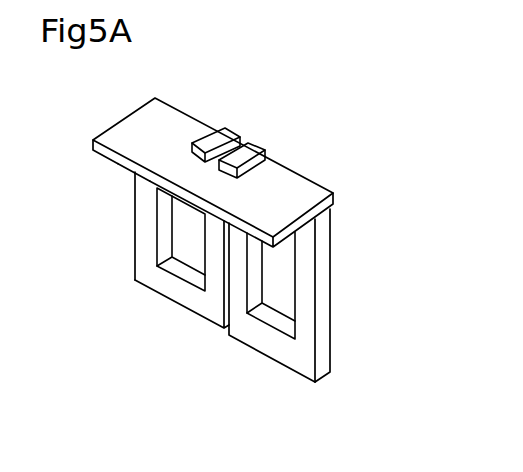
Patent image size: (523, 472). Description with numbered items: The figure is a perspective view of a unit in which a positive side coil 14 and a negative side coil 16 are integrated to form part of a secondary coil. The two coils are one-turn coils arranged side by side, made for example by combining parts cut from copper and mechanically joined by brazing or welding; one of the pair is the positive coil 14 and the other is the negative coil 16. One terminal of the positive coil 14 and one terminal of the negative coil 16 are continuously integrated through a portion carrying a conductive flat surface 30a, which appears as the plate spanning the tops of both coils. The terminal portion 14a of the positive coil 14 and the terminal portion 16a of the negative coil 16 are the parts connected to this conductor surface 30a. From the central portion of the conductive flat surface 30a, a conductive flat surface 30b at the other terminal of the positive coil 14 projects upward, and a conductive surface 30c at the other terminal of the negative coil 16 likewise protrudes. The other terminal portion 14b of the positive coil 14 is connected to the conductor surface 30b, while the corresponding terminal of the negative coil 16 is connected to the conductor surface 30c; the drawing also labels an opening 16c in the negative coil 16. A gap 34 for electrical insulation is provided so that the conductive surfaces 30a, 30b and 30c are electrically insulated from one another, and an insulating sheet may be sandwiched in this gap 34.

The positive side coil 14 is at (182, 301).
The terminal portion of the positive coil 14a is at (215, 228).
The other terminal portion of the positive coil 14b is at (147, 193).
The negative side coil 16 is at (273, 348).
The terminal portion of the negative coil 16a is at (332, 228).
The opening of second support block 16c is at (263, 258).
The conductive flat surface 30a is at (310, 178).
The conductive flat surface 30b is at (240, 124).
The conductive surface 30c is at (250, 146).
The gap 34 is at (133, 175).